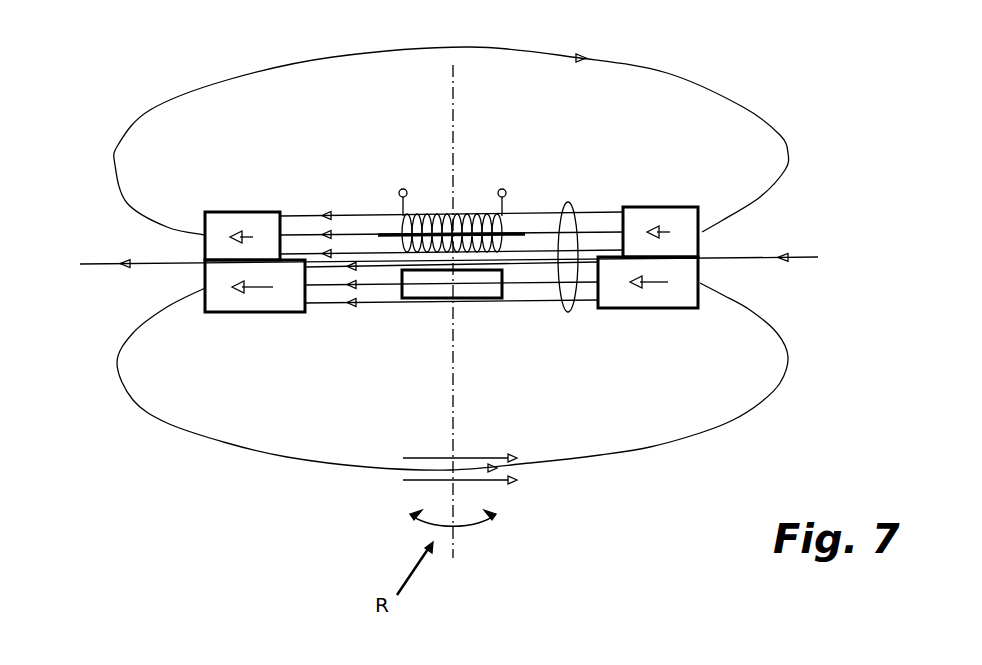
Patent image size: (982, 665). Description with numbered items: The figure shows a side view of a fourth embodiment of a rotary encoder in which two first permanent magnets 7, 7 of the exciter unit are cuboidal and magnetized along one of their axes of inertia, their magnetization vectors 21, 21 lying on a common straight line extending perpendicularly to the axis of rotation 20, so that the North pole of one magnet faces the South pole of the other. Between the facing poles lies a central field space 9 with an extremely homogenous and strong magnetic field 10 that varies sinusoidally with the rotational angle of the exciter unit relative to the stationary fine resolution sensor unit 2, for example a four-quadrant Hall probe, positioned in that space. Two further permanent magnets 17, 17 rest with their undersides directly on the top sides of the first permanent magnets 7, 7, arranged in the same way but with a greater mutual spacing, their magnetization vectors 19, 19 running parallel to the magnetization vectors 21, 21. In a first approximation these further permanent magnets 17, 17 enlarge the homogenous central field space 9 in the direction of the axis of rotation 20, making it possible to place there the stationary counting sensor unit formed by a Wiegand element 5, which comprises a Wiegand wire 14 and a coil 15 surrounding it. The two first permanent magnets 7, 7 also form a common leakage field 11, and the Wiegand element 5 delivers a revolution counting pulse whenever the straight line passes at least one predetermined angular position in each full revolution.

The fine resolution sensor unit 2 is at (467, 285).
The Wiegand element 5 is at (415, 162).
The first permanent magnet 7 is at (225, 313).
The central field space 9 is at (587, 257).
The magnetic field 10 is at (570, 310).
The common leakage field 11 is at (673, 73).
The Wiegand wire 14 is at (392, 232).
The coil 15 is at (505, 213).
The further permanent magnet 17 is at (223, 220).
The magnetization vector 19 is at (248, 230).
The axis of rotation 20 is at (455, 528).
The magnetization vector 21 is at (253, 290).